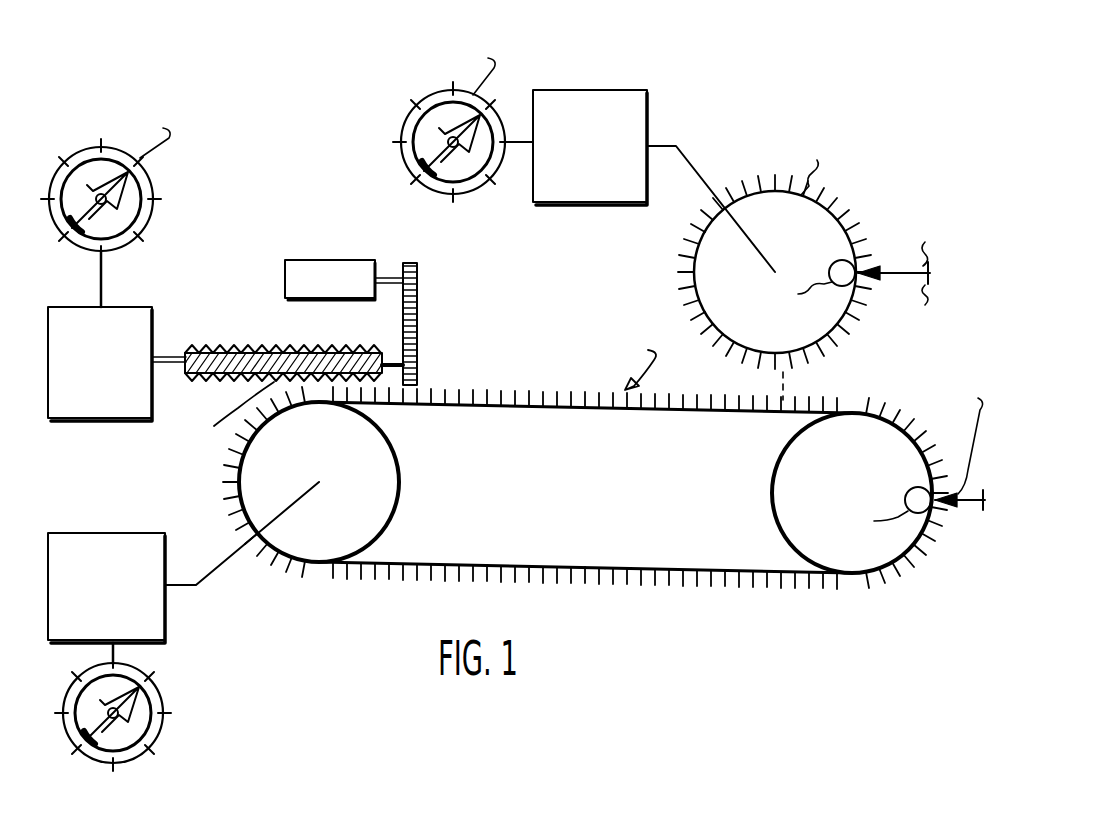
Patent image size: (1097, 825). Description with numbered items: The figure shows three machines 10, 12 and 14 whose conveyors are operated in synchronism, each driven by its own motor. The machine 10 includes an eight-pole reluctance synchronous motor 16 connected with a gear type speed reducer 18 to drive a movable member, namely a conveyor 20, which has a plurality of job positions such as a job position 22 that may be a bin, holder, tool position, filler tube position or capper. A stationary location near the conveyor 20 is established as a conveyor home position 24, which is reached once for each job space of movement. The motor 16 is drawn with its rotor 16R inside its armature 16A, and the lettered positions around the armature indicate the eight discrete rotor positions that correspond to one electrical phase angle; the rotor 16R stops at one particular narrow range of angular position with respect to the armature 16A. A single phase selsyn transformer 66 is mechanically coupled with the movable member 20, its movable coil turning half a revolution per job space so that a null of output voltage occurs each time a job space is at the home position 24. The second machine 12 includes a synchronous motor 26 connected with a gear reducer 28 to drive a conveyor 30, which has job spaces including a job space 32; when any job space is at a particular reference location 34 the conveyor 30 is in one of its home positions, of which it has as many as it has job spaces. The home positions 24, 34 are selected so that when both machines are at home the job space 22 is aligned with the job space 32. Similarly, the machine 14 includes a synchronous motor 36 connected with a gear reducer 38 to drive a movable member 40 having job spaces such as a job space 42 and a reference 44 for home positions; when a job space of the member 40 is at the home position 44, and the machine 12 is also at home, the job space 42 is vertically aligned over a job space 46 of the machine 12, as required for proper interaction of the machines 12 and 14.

The machine 10 is at (290, 160).
The second machine 12 is at (558, 507).
The machine 14 is at (760, 85).
The reluctance synchronous motor 16 is at (153, 171).
The armature 16A is at (150, 160).
The rotor 16R is at (124, 214).
The speed reducer 18 is at (95, 418).
The conveyor 20 is at (200, 347).
The job position 22 is at (362, 354).
The conveyor home position 24 is at (298, 346).
The synchronous motor 26 is at (150, 686).
The gear reducer 28 is at (113, 533).
The conveyor 30 is at (825, 256).
The job space 32 is at (337, 404).
The reference location 34 is at (967, 508).
The synchronous motor 36 is at (454, 198).
The gear reducer 38 is at (595, 90).
The movable member 40 is at (788, 237).
The job space 42 is at (781, 352).
The reference for home positions 44 is at (915, 273).
The job space 46 is at (776, 414).
The selsyn transformer 66 is at (370, 243).